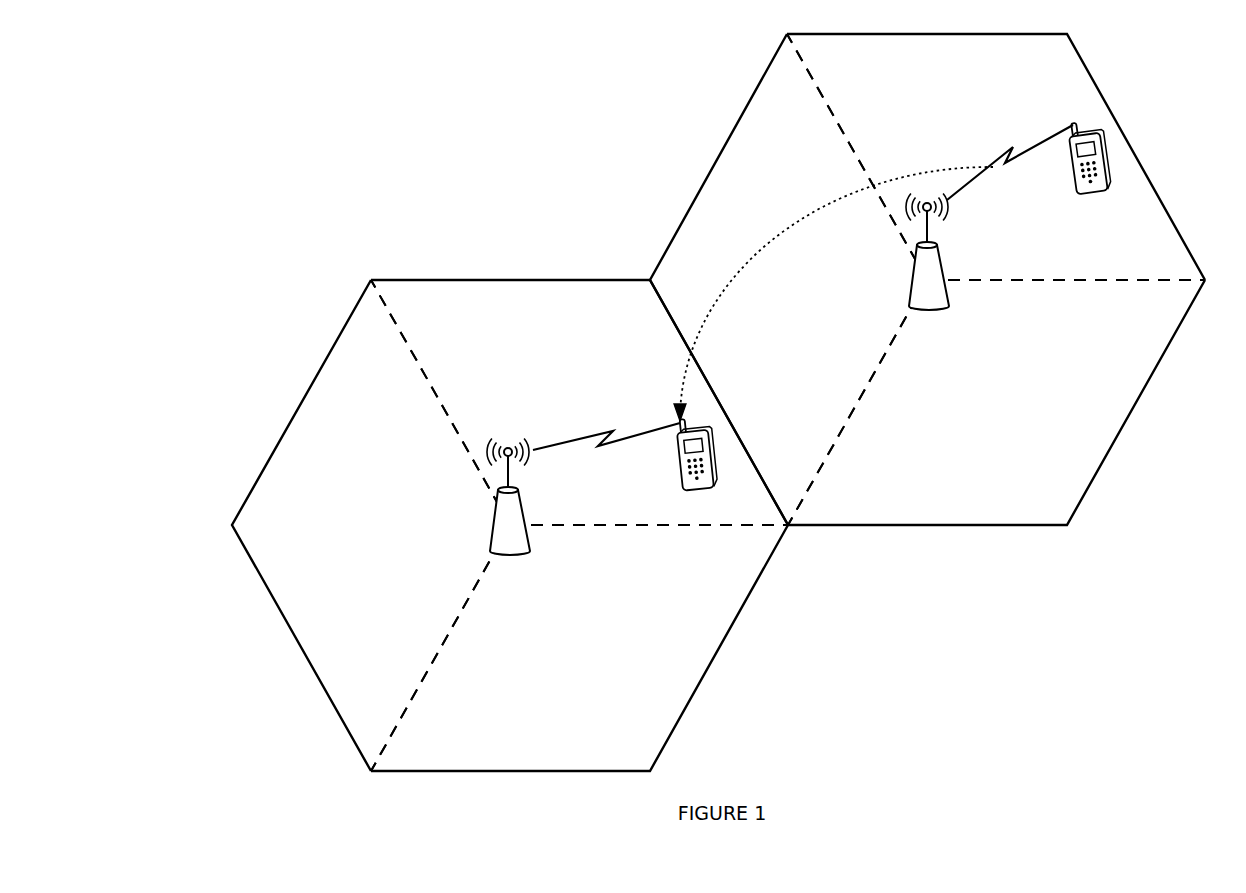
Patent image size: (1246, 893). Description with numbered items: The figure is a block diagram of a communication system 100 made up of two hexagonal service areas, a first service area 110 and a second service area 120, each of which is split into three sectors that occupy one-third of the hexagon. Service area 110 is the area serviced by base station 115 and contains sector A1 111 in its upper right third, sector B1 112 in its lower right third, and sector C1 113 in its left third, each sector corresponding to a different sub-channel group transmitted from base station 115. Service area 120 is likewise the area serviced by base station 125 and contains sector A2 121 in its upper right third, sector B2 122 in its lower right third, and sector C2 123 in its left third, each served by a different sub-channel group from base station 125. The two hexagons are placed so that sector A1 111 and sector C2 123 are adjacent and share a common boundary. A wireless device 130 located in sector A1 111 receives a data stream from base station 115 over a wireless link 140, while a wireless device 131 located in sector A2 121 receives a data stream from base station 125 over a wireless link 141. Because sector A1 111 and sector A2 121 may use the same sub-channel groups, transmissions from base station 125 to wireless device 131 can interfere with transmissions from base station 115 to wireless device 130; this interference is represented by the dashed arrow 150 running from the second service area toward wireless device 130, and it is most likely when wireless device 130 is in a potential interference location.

The communication system 100 is at (236, 80).
The service area 110 is at (510, 534).
The sector A1 111 is at (614, 338).
The sector B1 112 is at (609, 745).
The sector C1 113 is at (330, 778).
The base station 115 is at (491, 549).
The service area 120 is at (927, 290).
The sector A2 121 is at (1027, 94).
The sector B2 122 is at (1025, 501).
The sector C2 123 is at (788, 279).
The base station 125 is at (907, 306).
The wireless device 130 is at (673, 485).
The wireless device 131 is at (1085, 198).
The wireless link 140 is at (612, 428).
The wireless link 141 is at (1012, 151).
The dashed arrow 150 is at (776, 238).